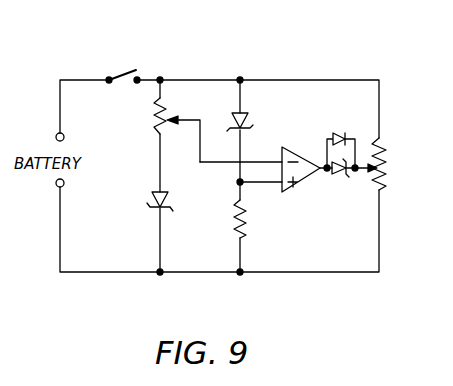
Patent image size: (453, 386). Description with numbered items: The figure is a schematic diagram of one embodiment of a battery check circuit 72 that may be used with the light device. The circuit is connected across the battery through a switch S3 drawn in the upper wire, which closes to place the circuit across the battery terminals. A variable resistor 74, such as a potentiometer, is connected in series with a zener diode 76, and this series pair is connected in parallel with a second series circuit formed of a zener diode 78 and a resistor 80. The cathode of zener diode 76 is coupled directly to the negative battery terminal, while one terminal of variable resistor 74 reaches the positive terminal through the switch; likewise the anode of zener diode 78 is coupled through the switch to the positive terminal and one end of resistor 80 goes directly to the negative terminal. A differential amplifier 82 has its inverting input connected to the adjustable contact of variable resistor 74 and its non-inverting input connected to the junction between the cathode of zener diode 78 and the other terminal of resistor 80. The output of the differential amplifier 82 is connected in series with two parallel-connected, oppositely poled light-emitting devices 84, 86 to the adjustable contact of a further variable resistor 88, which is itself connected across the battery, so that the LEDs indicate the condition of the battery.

The battery check circuit 72 is at (237, 52).
The switch S3 is at (125, 70).
The variable resistor 74 is at (156, 116).
The zener diode 76 is at (152, 199).
The zener diode 78 is at (246, 118).
The resistor 80 is at (253, 220).
The differential amplifier 82 is at (305, 161).
The light-emitting device 84 is at (341, 132).
The light-emitting device 86 is at (341, 177).
The variable resistor 88 is at (376, 192).